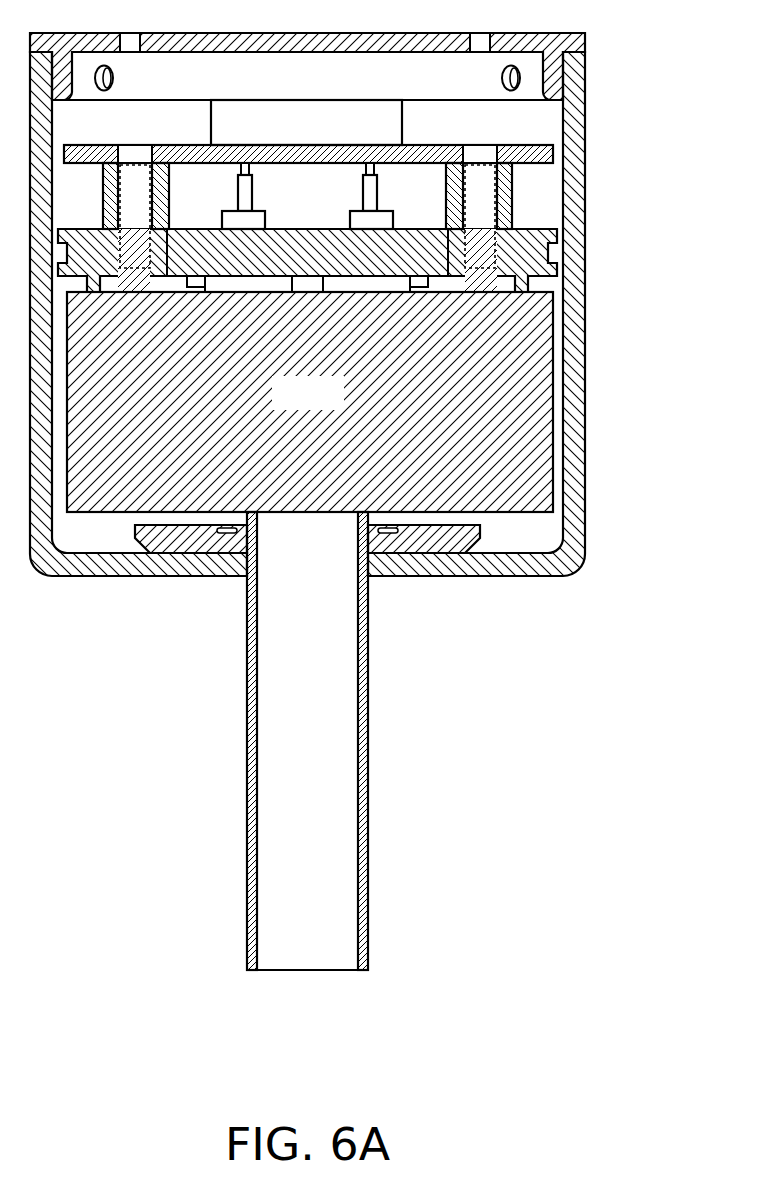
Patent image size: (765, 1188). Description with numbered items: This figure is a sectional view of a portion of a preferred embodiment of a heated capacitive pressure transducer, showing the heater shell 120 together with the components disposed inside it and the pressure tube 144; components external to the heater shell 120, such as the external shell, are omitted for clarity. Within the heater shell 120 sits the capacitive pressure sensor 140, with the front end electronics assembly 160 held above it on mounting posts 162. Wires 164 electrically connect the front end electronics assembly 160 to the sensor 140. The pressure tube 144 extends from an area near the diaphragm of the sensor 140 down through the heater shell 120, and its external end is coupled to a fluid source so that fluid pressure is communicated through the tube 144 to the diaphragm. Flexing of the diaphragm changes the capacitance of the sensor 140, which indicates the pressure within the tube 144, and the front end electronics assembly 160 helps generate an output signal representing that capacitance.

The heater shell 120 is at (588, 479).
The capacitive pressure sensor 140 is at (332, 409).
The pressure tube 144 is at (368, 831).
The front end electronics assembly 160 is at (427, 145).
The mounting posts 162 is at (142, 195).
The wires 164 is at (363, 187).